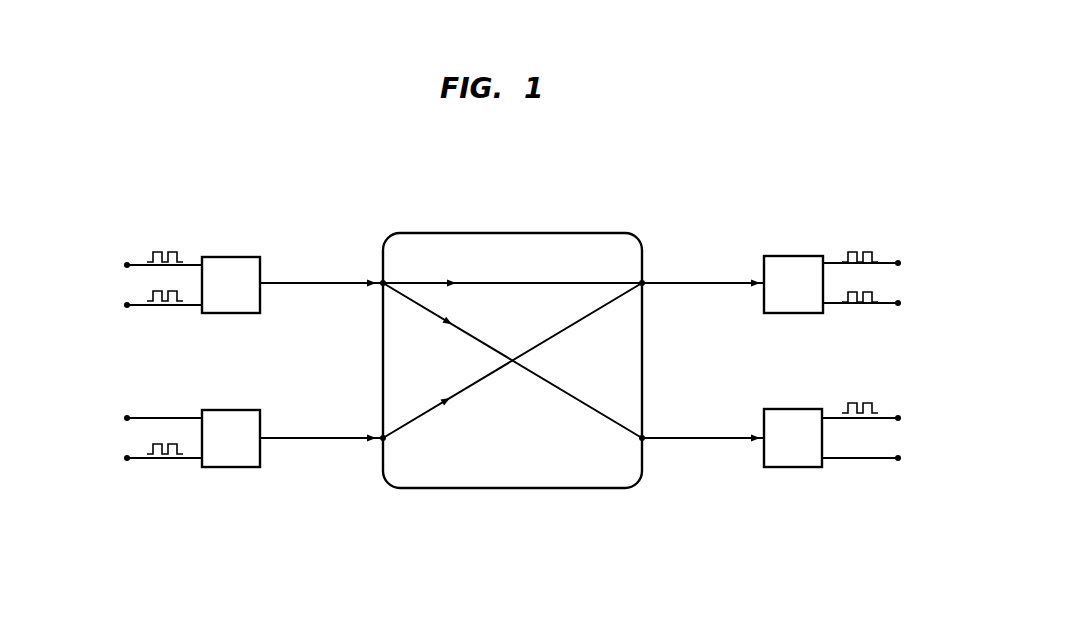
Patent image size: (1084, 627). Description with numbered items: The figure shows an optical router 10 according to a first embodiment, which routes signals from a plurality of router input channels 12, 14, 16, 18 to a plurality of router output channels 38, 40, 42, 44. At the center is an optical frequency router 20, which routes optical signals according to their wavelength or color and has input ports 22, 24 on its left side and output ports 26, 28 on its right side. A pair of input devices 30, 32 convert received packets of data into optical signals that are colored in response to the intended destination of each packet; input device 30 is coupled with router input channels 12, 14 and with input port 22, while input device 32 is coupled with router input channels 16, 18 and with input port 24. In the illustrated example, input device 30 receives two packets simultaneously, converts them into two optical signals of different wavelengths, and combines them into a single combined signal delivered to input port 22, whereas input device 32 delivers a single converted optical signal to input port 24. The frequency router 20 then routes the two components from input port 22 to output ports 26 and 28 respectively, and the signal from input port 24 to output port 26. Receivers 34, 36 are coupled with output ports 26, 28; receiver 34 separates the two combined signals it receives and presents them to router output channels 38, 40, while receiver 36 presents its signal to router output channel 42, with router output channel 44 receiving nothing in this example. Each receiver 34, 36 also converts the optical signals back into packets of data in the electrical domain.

The optical router 10 is at (641, 202).
The router input channel 12 is at (125, 267).
The router input channel 14 is at (125, 307).
The router input channel 16 is at (125, 420).
The router input channel 18 is at (125, 460).
The optical frequency router 20 is at (522, 448).
The input port 22 is at (383, 285).
The input port 24 is at (383, 440).
The output port 26 is at (642, 285).
The output port 28 is at (642, 440).
The input device 30 is at (243, 297).
The input device 32 is at (243, 451).
The receiver 34 is at (805, 296).
The receiver 36 is at (805, 451).
The router output channel 38 is at (900, 261).
The router output channel 40 is at (900, 301).
The router output channel 42 is at (900, 416).
The router output channel 44 is at (900, 456).